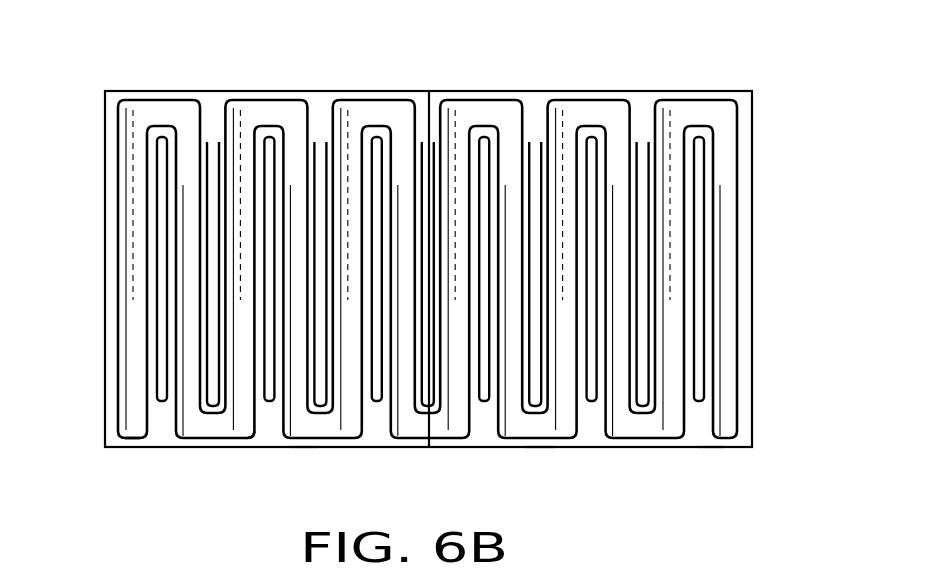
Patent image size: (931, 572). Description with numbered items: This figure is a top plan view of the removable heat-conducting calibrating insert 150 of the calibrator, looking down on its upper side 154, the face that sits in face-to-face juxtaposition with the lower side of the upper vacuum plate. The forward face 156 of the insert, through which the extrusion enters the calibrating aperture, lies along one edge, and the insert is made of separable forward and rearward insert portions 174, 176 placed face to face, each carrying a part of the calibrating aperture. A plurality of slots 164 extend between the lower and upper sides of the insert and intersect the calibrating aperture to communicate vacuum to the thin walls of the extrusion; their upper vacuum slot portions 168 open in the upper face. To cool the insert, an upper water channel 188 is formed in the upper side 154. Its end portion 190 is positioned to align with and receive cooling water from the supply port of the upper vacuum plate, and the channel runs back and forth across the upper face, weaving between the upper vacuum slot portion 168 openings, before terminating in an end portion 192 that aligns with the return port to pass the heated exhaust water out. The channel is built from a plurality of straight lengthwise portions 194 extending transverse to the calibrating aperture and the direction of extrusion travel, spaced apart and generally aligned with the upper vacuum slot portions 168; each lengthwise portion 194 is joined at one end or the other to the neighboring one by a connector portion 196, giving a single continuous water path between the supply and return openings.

The calibrating insert 150 is at (540, 448).
The upper side 154 is at (267, 430).
The forward face 156 is at (103, 177).
The slots 164 is at (184, 147).
The upper vacuum slot portion 168 is at (212, 137).
The forward insert portion 174 is at (302, 449).
The rearward insert portion 176 is at (711, 448).
The upper water channel 188 is at (120, 259).
The end portion 190 is at (133, 425).
The end portion 192 is at (733, 420).
The lengthwise portions 194 is at (203, 145).
The connector portion 196 is at (152, 103).